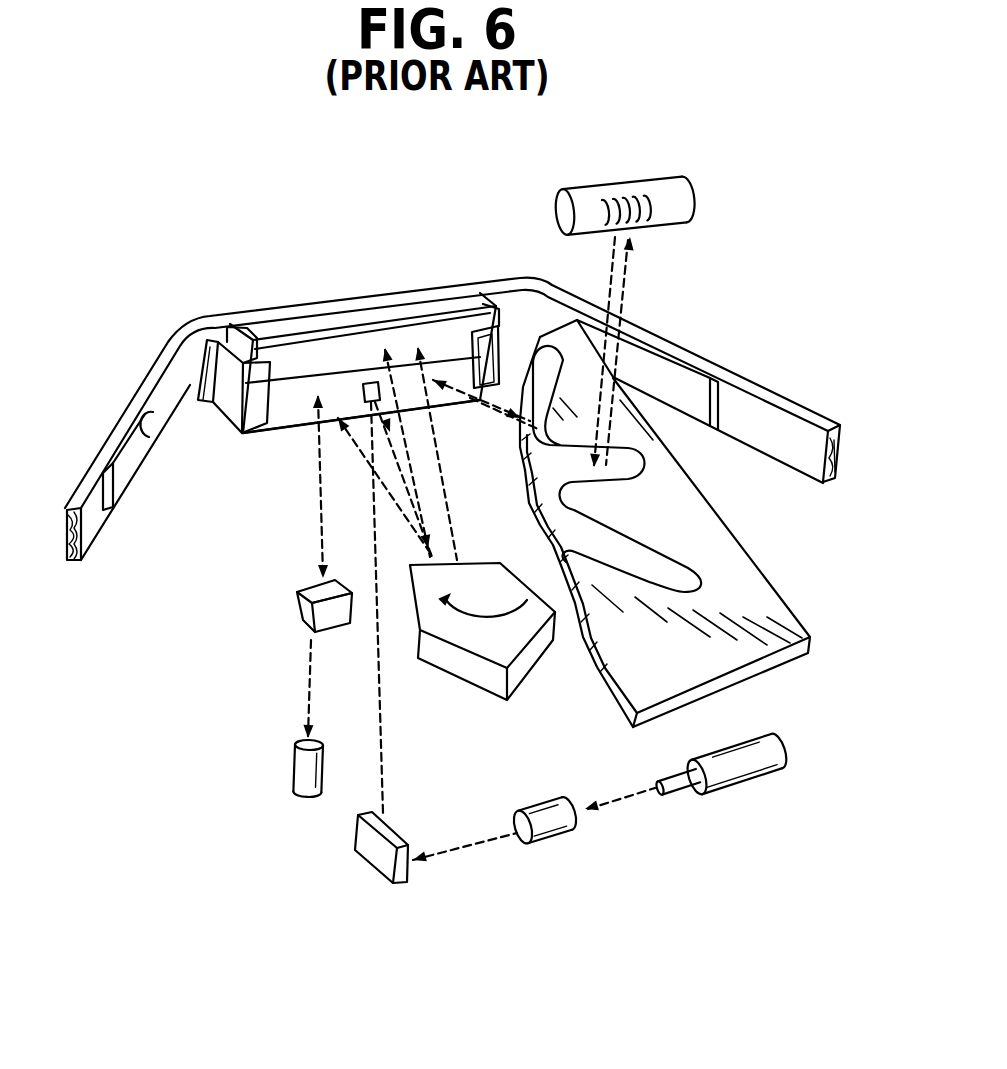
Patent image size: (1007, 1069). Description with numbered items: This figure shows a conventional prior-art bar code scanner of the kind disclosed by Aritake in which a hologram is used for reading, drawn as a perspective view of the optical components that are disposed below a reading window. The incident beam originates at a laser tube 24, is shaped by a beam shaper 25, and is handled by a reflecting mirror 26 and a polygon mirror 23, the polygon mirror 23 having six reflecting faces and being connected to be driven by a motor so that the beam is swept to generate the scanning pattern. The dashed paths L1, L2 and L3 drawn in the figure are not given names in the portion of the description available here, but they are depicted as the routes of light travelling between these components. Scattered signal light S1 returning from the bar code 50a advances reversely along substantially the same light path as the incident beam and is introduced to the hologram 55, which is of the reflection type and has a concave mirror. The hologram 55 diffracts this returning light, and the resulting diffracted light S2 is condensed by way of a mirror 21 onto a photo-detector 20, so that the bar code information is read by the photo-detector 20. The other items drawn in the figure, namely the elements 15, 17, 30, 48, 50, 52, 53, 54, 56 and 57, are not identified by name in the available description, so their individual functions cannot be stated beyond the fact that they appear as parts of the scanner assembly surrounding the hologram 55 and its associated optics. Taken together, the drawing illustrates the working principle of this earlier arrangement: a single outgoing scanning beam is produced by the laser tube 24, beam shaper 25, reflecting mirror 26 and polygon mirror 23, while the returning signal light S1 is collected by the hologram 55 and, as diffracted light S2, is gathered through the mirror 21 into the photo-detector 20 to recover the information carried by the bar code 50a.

The frame side arm 15 is at (152, 400).
The mirror 17 is at (735, 387).
The photo-detector 20 is at (304, 770).
The mirror 21 is at (300, 612).
The polygon mirror 23 is at (468, 672).
The laser tube 24 is at (733, 787).
The beam shaper 25 is at (562, 837).
The reflecting mirror 26 is at (355, 840).
The transparent plate 30 is at (757, 588).
The rail 48 is at (820, 410).
The heater 50 is at (682, 200).
The bar code 50a is at (647, 215).
The frame 52 is at (328, 300).
The housing 53 is at (300, 312).
The clip block 54 is at (278, 355).
The hologram 55 is at (290, 412).
The sensor 56 is at (370, 383).
The clip plate 57 is at (213, 358).
The scattered signal light S1 is at (603, 273).
The diffracted light S2 is at (317, 515).
The laser beam L1 is at (483, 845).
The laser beam L2 is at (466, 345).
The laser beam L3 is at (627, 318).